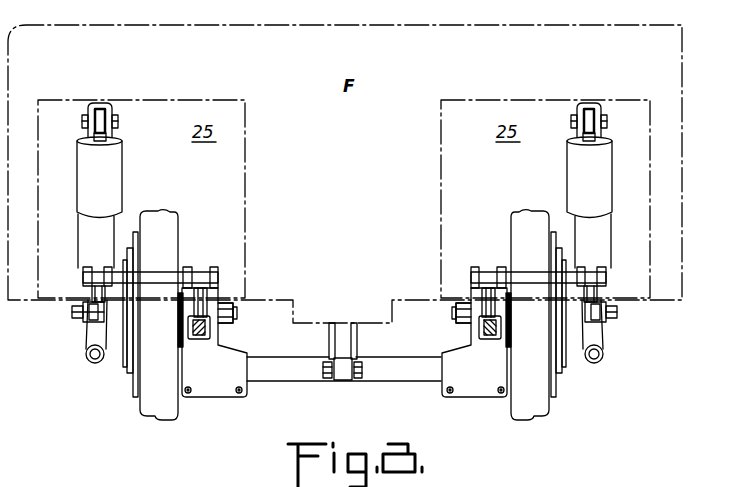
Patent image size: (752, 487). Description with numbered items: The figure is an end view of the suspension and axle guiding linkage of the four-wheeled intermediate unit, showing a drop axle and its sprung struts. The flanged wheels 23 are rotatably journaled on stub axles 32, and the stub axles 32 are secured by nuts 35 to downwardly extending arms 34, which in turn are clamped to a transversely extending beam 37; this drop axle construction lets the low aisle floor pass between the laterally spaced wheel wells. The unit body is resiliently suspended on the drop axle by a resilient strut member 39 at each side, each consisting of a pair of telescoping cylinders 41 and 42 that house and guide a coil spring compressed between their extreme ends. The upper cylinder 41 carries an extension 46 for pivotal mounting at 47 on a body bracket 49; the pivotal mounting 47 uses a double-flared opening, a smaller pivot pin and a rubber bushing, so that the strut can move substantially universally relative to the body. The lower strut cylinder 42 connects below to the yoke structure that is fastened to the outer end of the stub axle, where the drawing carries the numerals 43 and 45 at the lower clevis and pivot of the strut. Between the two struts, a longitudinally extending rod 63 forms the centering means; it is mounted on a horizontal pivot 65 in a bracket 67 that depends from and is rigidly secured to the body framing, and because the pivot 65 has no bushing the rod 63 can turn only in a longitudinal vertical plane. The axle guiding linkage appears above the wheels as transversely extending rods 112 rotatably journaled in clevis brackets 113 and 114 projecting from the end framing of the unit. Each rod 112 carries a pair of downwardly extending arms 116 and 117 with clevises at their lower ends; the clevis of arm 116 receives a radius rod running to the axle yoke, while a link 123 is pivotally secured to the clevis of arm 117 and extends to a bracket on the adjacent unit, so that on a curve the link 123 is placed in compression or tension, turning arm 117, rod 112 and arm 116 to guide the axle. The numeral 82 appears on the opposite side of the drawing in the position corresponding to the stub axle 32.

The flanged wheels 23 is at (151, 400).
The stub axles 32 is at (118, 318).
The downwardly extending arms 34 is at (213, 352).
The nuts 35 is at (235, 305).
The transversely extending beam 37 is at (398, 368).
The resilient strut member 39 is at (379, 167).
The upper cylinder 41 is at (108, 186).
The lower strut cylinder 42 is at (103, 231).
The lower clevis 43 is at (82, 301).
The pivot pin 45 is at (87, 356).
The extension 46 is at (100, 134).
The pivotal mounting 47 is at (118, 122).
The body bracket 49 is at (99, 103).
The longitudinally extending rod 63 is at (340, 368).
The horizontal pivot 65 is at (322, 368).
The bracket 67 is at (356, 343).
The swing arm 82 is at (568, 320).
The transversely extending rods 112 is at (155, 276).
The clevis bracket 113 is at (213, 270).
The clevis bracket 114 is at (88, 266).
The downwardly extending arm 116 is at (82, 292).
The downwardly extending arm 117 is at (203, 293).
The link 123 is at (210, 336).